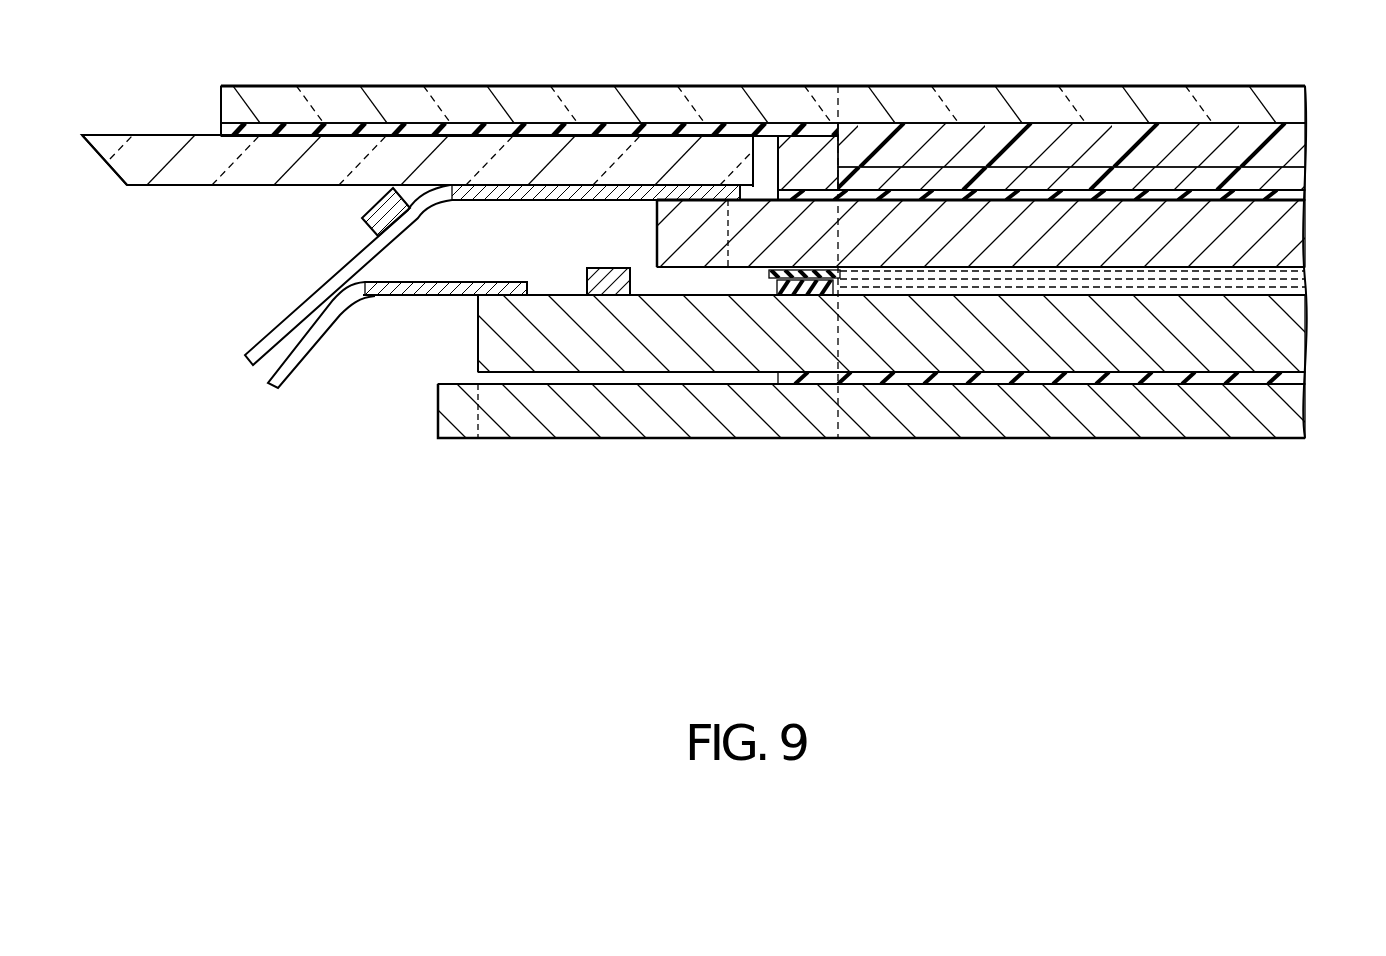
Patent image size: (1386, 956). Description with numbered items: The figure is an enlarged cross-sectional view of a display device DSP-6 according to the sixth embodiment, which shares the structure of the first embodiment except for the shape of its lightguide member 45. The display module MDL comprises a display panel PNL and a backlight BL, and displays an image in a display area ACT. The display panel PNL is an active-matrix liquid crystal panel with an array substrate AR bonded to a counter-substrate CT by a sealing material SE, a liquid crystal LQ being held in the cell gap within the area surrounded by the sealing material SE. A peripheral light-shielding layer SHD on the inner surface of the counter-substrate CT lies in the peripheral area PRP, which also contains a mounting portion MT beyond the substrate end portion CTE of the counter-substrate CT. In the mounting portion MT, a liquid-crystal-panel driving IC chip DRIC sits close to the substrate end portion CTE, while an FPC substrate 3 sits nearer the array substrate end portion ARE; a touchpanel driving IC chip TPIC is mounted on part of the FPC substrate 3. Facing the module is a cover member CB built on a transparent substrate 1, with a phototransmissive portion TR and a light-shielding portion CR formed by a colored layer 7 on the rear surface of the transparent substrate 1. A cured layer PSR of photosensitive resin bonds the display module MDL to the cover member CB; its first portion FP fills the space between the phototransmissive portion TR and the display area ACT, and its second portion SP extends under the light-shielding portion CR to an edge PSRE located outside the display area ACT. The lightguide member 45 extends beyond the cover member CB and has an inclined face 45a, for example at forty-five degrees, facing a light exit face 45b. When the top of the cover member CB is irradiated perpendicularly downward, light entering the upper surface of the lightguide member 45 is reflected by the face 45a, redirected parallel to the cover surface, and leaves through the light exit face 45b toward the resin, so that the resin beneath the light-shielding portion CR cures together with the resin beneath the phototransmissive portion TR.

The transparent substrate 1 is at (1300, 107).
The FPC substrate 3 is at (312, 303).
The colored layer 7 is at (283, 136).
The lightguide member 45 is at (233, 187).
The face (reflective face) 45a is at (106, 163).
The light exit face 45b is at (756, 173).
The cover member CB is at (214, 103).
The light-shielding portion CR is at (836, 80).
The second portion SP is at (800, 150).
The first portion FP is at (934, 145).
The phototransmissive portion TR is at (1303, 80).
The display area (active area) ACT is at (1303, 175).
The touchpanel driving IC chip TPIC is at (362, 217).
The mounting portion MT is at (571, 266).
The liquid-crystal-panel driving IC chip DRIC is at (606, 273).
The array substrate end portion ARE is at (470, 335).
The display panel PNL is at (470, 378).
The substrate end portion CTE is at (643, 254).
The edge PSRE is at (733, 191).
The peripheral light-shielding layer SHD is at (771, 277).
The sealing material SE is at (812, 293).
The array substrate AR is at (862, 346).
The liquid crystal LQ is at (905, 284).
The counter-substrate CT is at (950, 250).
The cured layer of photosensitive resin PSR is at (1010, 181).
The backlight BL is at (1268, 431).
The display module MDL is at (1312, 190).
The peripheral area PRP is at (835, 495).
The display device DSP-6 is at (714, 574).